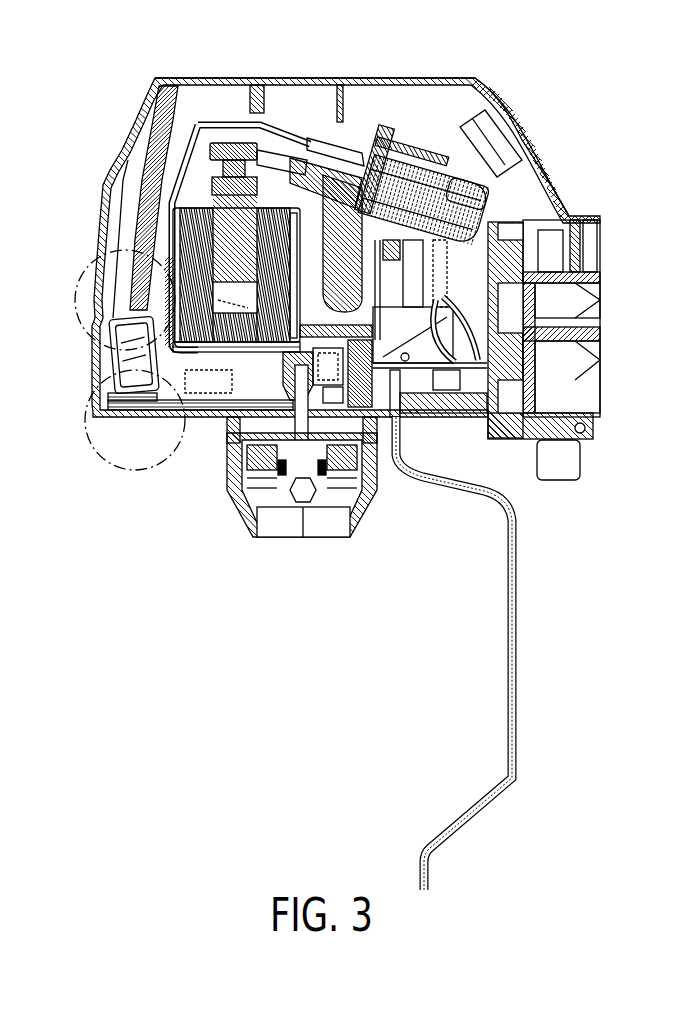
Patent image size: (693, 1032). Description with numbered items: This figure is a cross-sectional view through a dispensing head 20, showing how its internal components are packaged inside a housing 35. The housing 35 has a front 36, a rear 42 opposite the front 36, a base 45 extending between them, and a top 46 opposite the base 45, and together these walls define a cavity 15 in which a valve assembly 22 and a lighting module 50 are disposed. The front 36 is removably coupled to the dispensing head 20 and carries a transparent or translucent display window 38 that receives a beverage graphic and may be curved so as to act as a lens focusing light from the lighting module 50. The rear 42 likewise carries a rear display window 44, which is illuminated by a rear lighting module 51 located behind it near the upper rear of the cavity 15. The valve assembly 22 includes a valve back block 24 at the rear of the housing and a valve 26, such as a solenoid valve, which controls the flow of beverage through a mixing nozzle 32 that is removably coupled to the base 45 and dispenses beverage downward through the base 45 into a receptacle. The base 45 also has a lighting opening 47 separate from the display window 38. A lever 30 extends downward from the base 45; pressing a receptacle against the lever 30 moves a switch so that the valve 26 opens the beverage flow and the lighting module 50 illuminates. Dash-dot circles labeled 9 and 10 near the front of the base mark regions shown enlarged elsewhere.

The dispensing head 20 is at (598, 74).
The front 36 is at (152, 94).
The cavity 15 is at (216, 107).
The housing 35 is at (282, 82).
The top 46 is at (319, 82).
The valve assembly 22 is at (393, 106).
The valve 26 is at (431, 174).
The rear 42 is at (489, 92).
The rear lighting module 51 is at (498, 143).
The rear display window 44 is at (543, 159).
The valve back block 24 is at (532, 270).
The display window 38 is at (127, 143).
The lighting module 50 is at (136, 196).
The section line 10 is at (86, 258).
The section line 9 is at (80, 387).
The lighting opening 47 is at (124, 418).
The base 45 is at (213, 418).
The mixing nozzle 32 is at (259, 537).
The lever 30 is at (518, 695).